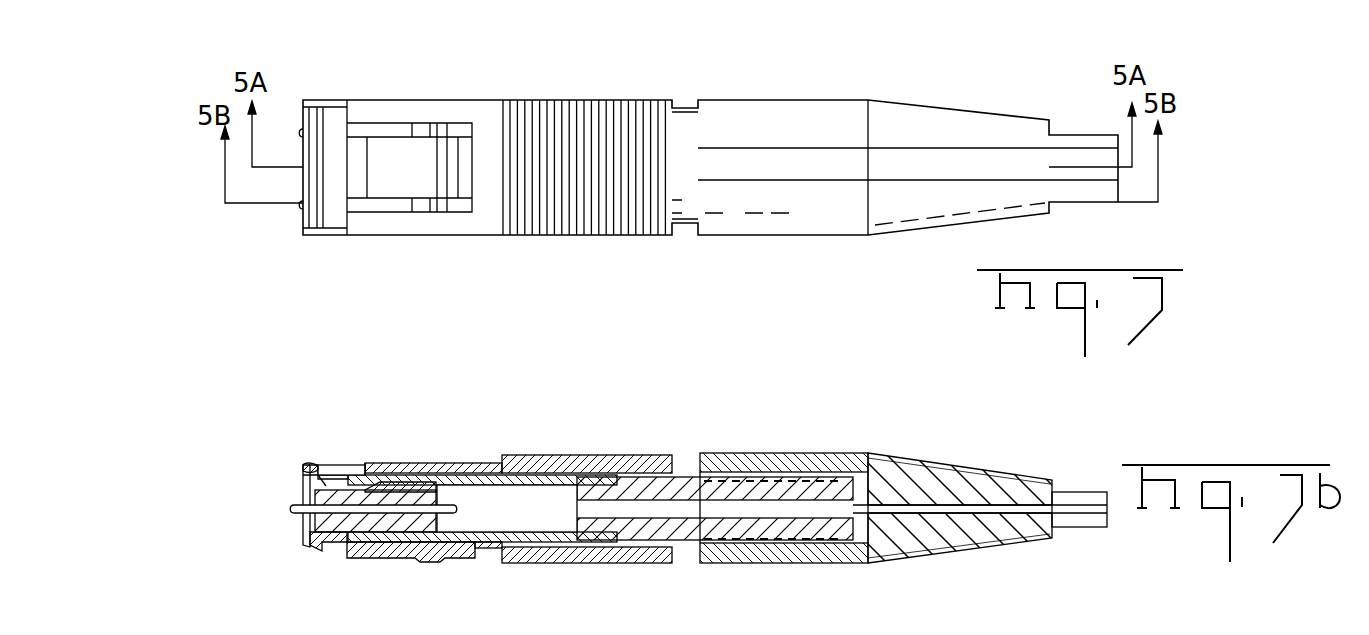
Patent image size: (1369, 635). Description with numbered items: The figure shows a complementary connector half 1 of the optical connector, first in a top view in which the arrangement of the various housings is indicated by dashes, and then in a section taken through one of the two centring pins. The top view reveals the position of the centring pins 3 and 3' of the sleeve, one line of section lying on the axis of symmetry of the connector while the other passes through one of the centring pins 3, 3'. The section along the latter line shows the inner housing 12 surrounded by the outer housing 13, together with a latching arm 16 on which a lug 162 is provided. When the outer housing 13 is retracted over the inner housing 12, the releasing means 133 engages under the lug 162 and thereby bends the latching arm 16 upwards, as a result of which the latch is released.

In FIG. 5, the complementary connector half 1 is at (544, 86).
In FIG. 5b, the complementary connector half 1 is at (742, 577).
In FIG. 5, the centring pin 3 is at (291, 81).
In FIG. 5b, the centring pin 3 is at (324, 468).
In FIG. 5, the centring pin 3' is at (264, 248).
In FIG. 5b, the inner housing 12 is at (350, 553).
In FIG. 5b, the outer housing 13 is at (613, 455).
In FIG. 5b, the latching arm 16 is at (327, 465).
In FIG. 5b, the releasing means 133 is at (306, 466).
In FIG. 5b, the lug 162 is at (352, 466).